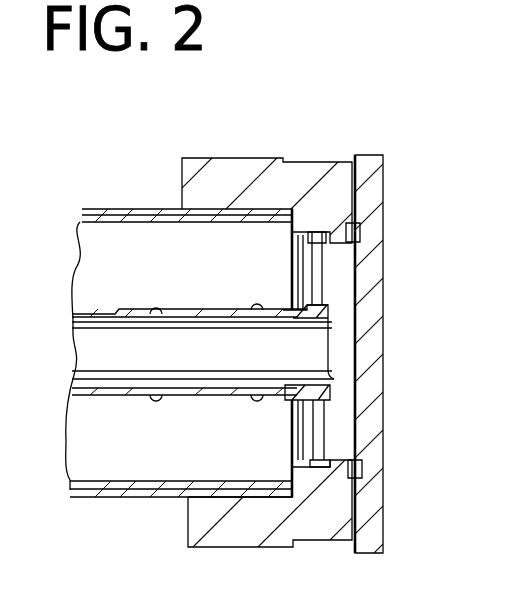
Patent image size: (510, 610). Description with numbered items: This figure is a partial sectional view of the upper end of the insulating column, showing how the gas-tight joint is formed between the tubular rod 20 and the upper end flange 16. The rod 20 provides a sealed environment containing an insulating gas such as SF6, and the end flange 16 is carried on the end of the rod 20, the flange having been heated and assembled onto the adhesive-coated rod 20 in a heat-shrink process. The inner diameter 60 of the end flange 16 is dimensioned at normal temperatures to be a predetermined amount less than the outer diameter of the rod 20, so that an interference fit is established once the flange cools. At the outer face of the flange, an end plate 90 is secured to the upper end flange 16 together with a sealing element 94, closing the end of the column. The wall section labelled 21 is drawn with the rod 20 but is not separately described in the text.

The end flange 16 is at (283, 160).
The rod 20 is at (132, 208).
The tube liner 21 is at (182, 226).
The inner diameter 60 is at (255, 488).
The end plate 90 is at (373, 348).
The sealing element 94 is at (362, 223).